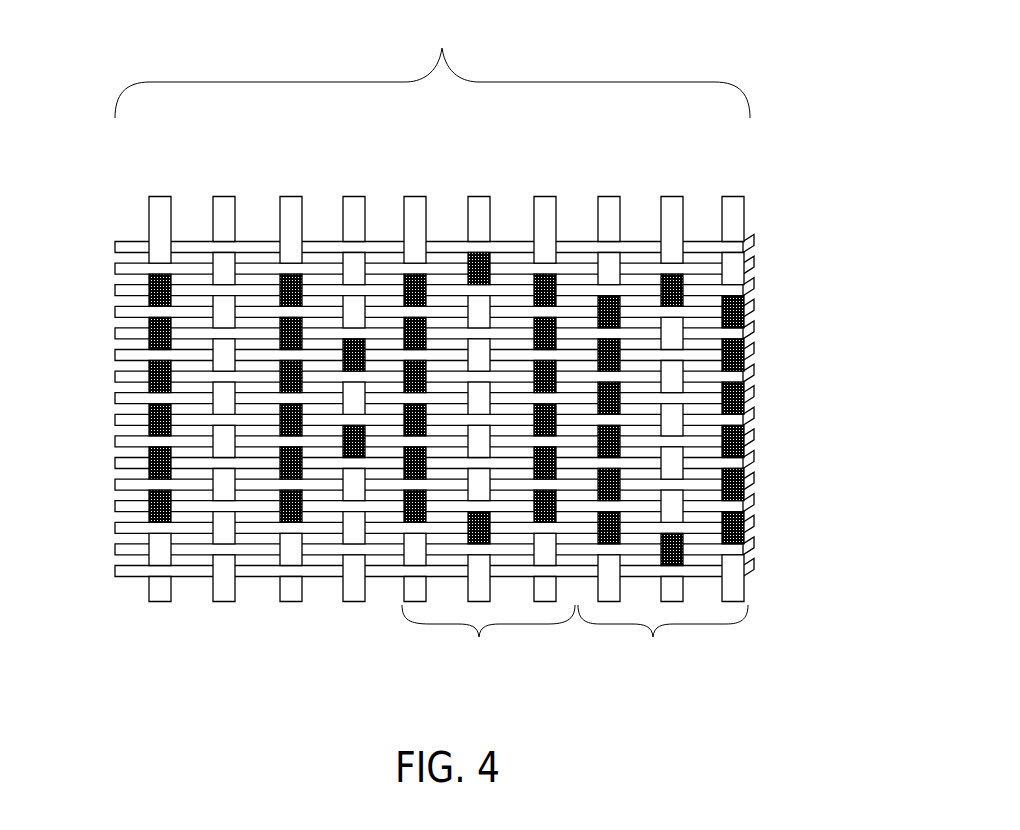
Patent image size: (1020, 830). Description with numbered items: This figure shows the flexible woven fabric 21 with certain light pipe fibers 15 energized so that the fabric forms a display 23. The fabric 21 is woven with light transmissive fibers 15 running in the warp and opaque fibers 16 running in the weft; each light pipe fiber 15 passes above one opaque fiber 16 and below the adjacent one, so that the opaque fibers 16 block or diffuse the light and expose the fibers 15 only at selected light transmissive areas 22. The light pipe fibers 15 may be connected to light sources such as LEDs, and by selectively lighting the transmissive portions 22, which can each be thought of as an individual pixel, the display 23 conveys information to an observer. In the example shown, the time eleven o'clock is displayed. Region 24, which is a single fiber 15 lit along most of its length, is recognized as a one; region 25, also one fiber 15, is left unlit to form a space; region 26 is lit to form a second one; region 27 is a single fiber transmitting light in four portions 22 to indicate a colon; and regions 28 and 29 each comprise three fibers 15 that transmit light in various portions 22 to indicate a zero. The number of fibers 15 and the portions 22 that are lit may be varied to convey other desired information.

The light pipe fibers 15 is at (374, 398).
The opaque fibers 16 is at (772, 437).
The flexible woven fabric 21 is at (826, 183).
The light transmissive areas 22 is at (137, 327).
The display 23 is at (432, 64).
The region 24 is at (118, 429).
The region 25 is at (229, 624).
The region 26 is at (296, 624).
The region 27 is at (359, 624).
The region 28 is at (488, 436).
The region 29 is at (676, 436).